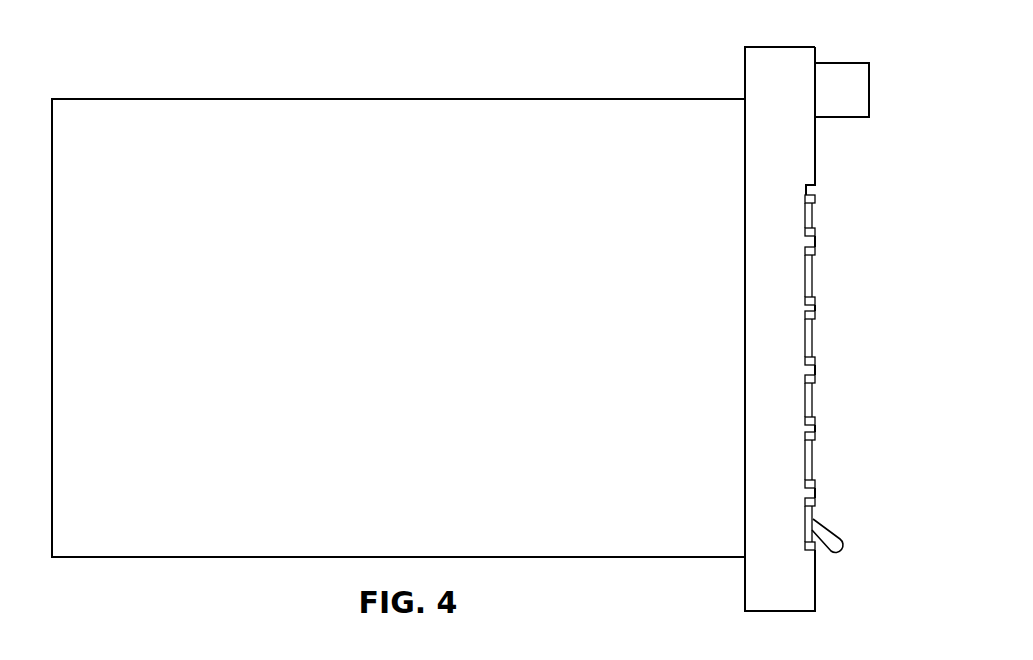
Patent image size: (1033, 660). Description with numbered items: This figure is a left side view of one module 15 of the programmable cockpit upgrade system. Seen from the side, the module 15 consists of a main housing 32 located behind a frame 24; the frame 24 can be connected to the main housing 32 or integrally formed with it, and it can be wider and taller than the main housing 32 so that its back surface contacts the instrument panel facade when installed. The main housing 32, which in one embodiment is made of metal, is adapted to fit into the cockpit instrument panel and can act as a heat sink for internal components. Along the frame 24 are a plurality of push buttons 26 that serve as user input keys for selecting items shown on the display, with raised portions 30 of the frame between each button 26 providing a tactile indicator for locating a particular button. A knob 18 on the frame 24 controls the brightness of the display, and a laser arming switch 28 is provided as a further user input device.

The module 15 is at (328, 93).
The knob 18 is at (842, 80).
The frame 24 is at (771, 80).
The push buttons 26 is at (810, 218).
The laser arming switch 28 is at (838, 534).
The raised portions 30 is at (810, 300).
The main housing 32 is at (602, 135).